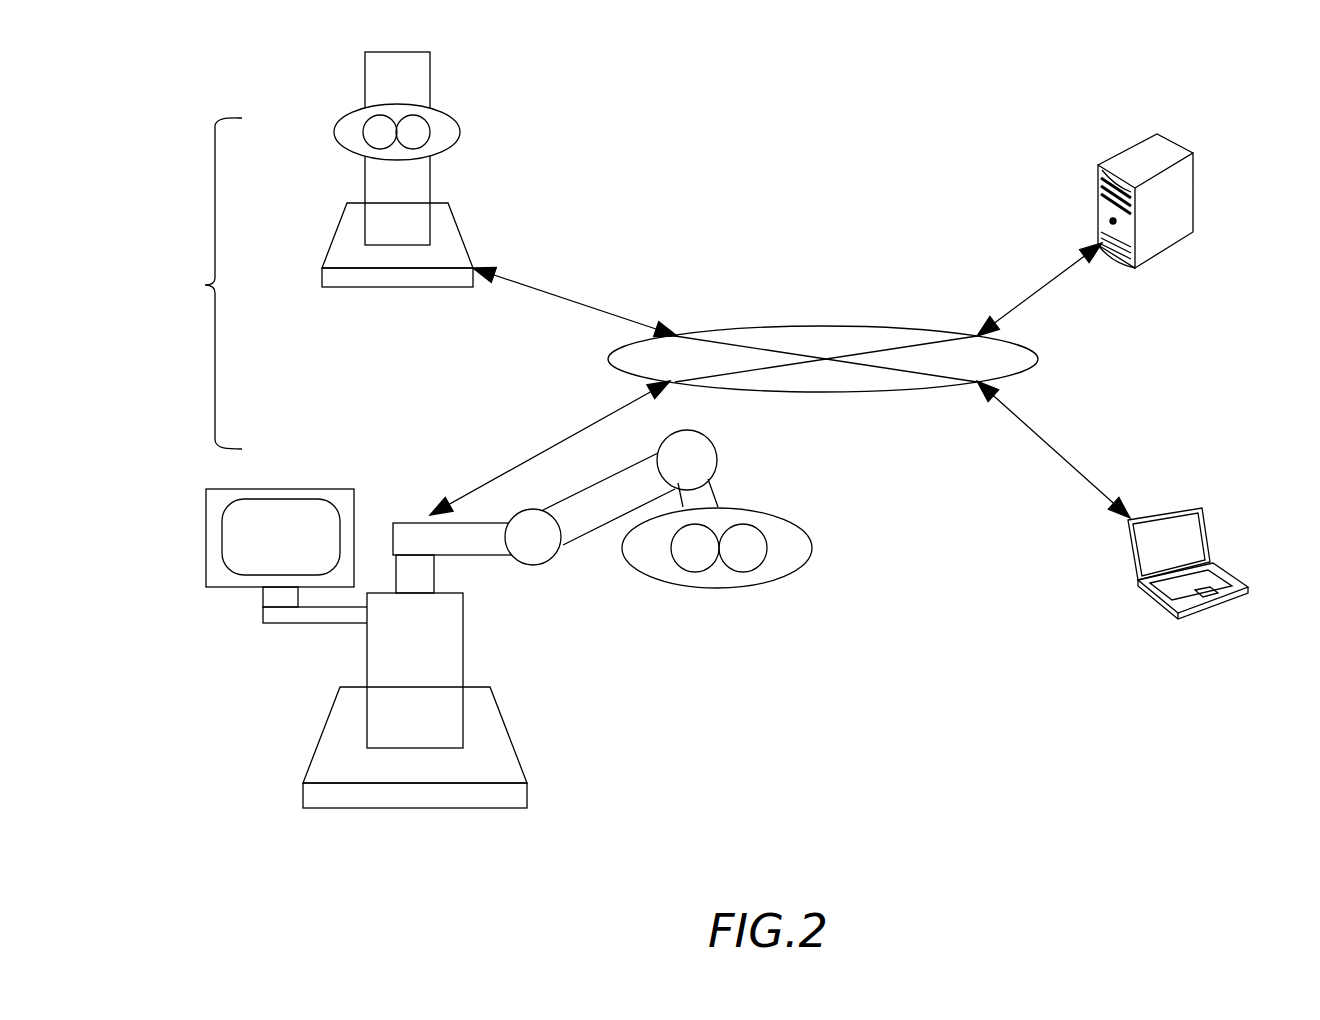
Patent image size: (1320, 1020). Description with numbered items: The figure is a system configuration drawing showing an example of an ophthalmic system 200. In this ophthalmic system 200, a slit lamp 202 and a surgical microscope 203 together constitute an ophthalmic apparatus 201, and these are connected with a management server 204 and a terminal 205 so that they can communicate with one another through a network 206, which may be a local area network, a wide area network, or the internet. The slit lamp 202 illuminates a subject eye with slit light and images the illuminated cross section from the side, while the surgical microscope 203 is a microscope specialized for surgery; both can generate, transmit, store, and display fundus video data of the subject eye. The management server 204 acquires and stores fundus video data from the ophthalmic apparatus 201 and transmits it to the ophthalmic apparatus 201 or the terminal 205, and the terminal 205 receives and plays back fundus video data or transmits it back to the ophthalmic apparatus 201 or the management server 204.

The ophthalmic system 200 is at (832, 163).
The ophthalmic apparatus 201 is at (205, 285).
The slit lamp 202 is at (333, 134).
The surgical microscope 203 is at (293, 488).
The management server 204 is at (1095, 200).
The terminal 205 is at (1135, 576).
The network 206 is at (833, 325).